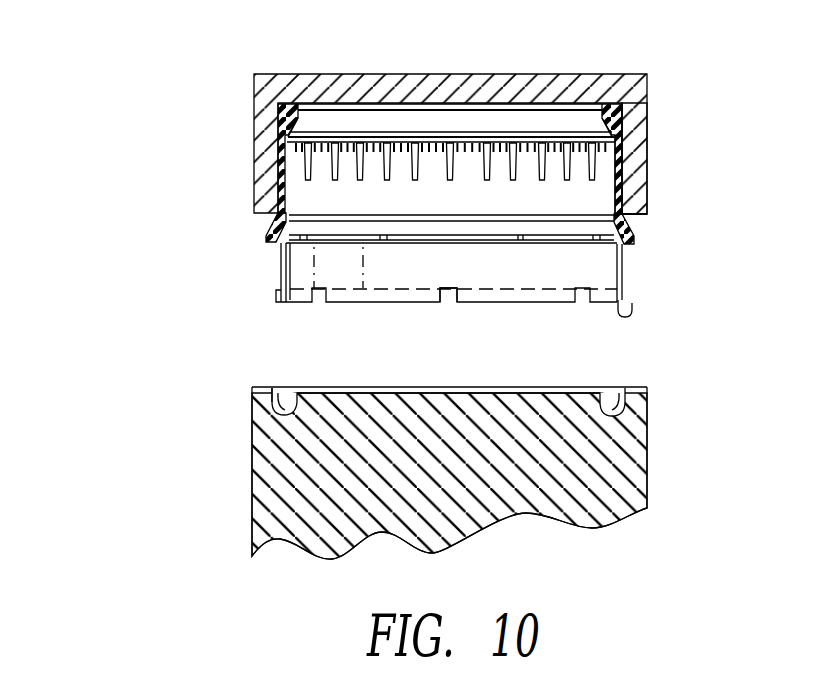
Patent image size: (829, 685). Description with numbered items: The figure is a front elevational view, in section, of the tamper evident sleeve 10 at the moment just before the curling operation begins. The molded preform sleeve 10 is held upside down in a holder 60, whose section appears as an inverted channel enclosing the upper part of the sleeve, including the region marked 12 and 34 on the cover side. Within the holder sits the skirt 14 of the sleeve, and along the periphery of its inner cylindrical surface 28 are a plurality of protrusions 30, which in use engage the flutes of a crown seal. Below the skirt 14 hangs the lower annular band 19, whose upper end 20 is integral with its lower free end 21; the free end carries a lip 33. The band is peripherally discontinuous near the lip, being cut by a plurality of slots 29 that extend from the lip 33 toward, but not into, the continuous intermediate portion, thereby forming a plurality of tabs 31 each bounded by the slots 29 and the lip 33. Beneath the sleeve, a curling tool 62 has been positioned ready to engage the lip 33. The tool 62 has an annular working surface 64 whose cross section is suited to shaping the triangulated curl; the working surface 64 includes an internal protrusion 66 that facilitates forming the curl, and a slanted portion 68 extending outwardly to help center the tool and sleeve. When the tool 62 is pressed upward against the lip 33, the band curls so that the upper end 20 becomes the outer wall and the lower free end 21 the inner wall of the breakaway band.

The tamper evident sleeve 10 is at (562, 107).
The cover cap 12 is at (623, 107).
The skirt 14 is at (625, 165).
The lower annular band 19 is at (280, 277).
The upper end 20 is at (279, 264).
The lower free end 21 is at (278, 297).
The inner cylindrical surface 28 is at (612, 190).
The slots 29 is at (453, 288).
The protrusions 30 is at (508, 167).
The tabs 31 is at (493, 297).
The lip 33 is at (634, 308).
The cover side wall 34 is at (645, 106).
The holder 60 is at (410, 74).
The curling tool 62 is at (647, 472).
The annular working surface 64 is at (625, 403).
The internal protrusion 66 is at (285, 403).
The slanted portion 68 is at (277, 390).